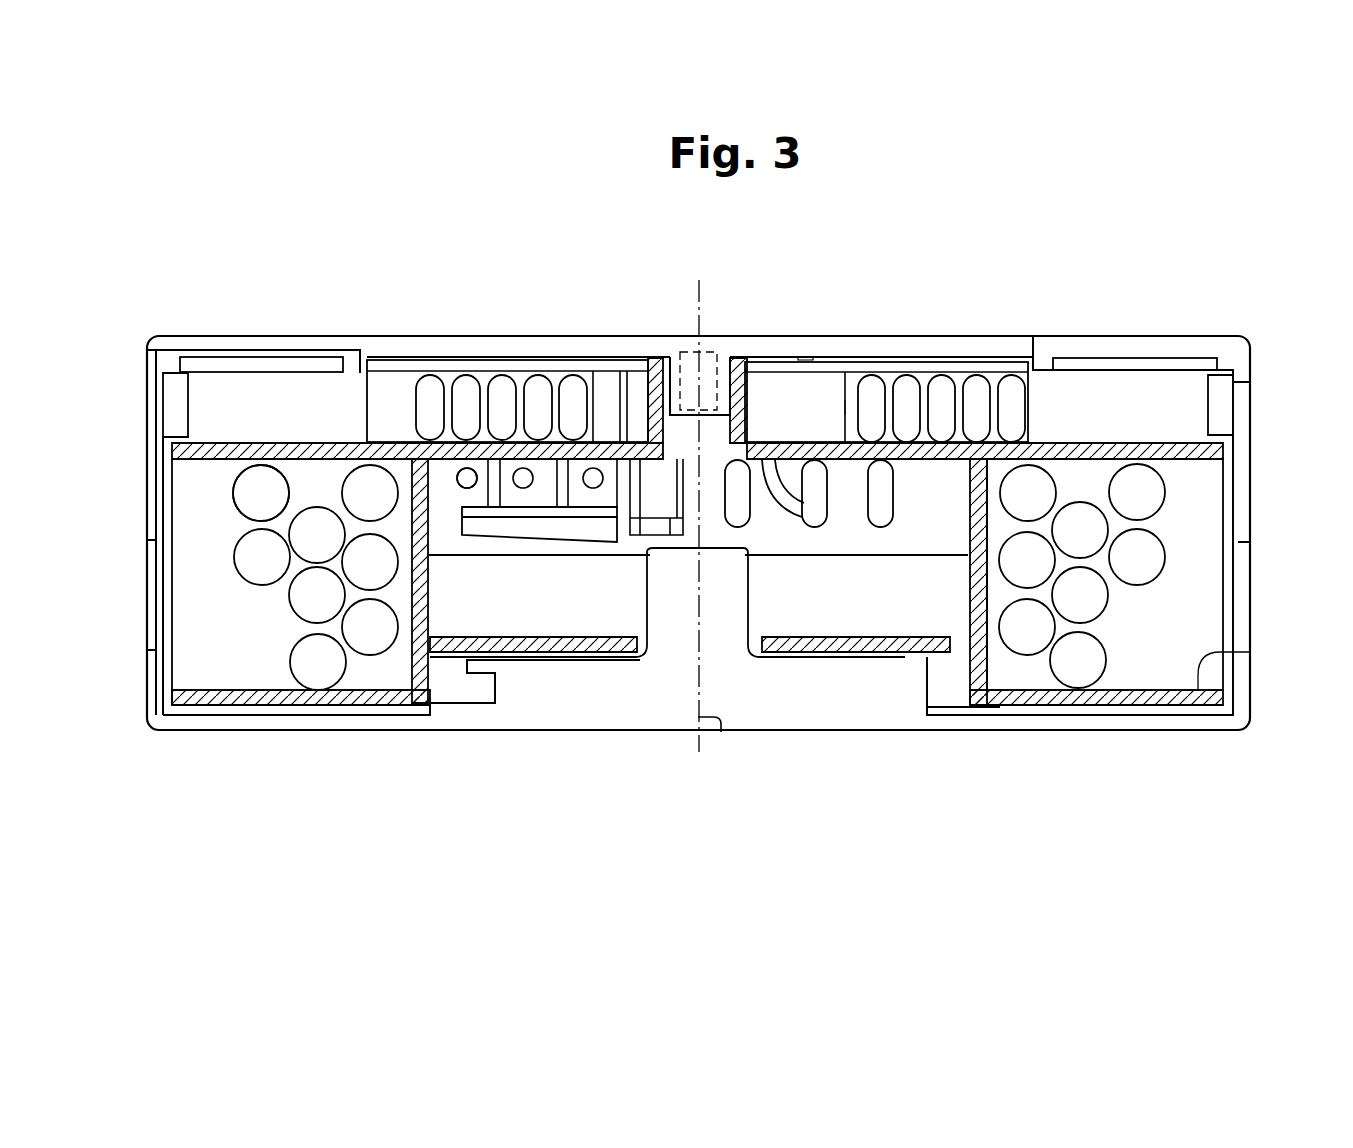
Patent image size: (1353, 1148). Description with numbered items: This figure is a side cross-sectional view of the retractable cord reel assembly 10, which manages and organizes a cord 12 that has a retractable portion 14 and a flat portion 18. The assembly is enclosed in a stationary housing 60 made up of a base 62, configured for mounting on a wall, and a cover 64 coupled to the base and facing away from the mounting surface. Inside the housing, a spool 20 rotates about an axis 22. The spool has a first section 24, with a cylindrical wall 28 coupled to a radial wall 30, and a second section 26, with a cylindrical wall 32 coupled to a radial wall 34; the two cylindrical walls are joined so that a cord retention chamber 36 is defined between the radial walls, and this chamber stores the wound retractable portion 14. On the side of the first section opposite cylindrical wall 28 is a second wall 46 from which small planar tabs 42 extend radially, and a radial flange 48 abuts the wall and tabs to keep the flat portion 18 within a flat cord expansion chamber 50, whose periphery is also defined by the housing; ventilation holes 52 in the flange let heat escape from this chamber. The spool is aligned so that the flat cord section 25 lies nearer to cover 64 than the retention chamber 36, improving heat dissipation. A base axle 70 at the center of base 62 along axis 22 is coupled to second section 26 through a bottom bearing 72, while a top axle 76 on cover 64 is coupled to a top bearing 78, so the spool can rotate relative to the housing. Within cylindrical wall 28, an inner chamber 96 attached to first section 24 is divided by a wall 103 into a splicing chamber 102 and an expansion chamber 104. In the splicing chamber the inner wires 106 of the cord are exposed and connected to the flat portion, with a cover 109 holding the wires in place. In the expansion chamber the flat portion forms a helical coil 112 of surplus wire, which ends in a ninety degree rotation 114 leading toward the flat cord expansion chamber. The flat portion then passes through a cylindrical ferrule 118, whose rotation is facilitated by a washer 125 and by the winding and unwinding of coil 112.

The retractable cord reel assembly 10 is at (612, 318).
The cord 12 is at (313, 493).
The retractable portion 14 is at (237, 487).
The flat portion 18 is at (393, 378).
The spool 20 is at (332, 443).
The axis 22 is at (717, 725).
The first section 24 is at (202, 463).
The flat cord section 25 is at (1183, 423).
The second section 26 is at (202, 688).
The cylindrical wall 28 is at (948, 480).
The radial wall 30 is at (1078, 443).
The cylindrical wall 32 is at (968, 605).
The radial wall 34 is at (1250, 652).
The cord retention chamber 36 is at (1190, 507).
The planar tabs 42 is at (585, 385).
The second wall 46 is at (738, 392).
The radial flange 48 is at (885, 360).
The flat cord expansion chamber 50 is at (1158, 400).
The ventilation holes 52 is at (862, 360).
The housing 60 is at (185, 333).
The base 62 is at (229, 731).
The cover 64 is at (150, 372).
The base axle 70 is at (748, 590).
The bottom bearing 72 is at (623, 657).
The top axle 76 is at (683, 350).
The top bearing 78 is at (728, 358).
The inner chamber 96 is at (472, 555).
The splicing chamber 102 is at (513, 467).
The wall 103 is at (587, 540).
The expansion chamber 104 is at (852, 523).
The inner wires 106 is at (460, 476).
The cover 109 is at (527, 540).
The coil 112 is at (890, 540).
The ninety degree rotation 114 is at (788, 503).
The ferrule 118 is at (848, 408).
The washer 125 is at (786, 370).